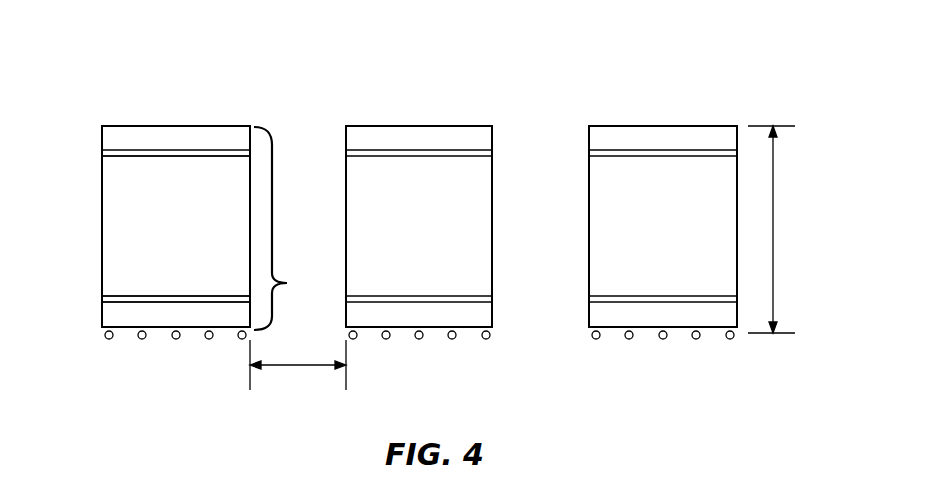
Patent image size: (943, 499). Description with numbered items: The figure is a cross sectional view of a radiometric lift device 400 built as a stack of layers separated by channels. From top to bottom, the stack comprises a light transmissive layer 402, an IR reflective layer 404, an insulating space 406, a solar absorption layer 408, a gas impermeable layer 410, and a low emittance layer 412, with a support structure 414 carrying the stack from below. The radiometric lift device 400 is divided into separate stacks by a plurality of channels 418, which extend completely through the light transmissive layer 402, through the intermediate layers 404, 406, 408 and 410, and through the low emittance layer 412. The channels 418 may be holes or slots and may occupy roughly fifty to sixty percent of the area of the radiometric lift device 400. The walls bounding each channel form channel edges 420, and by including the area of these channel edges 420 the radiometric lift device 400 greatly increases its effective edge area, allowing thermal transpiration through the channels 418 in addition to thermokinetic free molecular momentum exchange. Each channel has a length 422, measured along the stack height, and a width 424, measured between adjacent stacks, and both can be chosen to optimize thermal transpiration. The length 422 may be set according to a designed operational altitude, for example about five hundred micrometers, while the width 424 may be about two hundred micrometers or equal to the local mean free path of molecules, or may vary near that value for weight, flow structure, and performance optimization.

The radiometric lift device 400 is at (432, 215).
The light transmissive layer 402 is at (102, 140).
The IR reflective layer 404 is at (102, 152).
The insulating space 406 is at (102, 232).
The solar absorption layer 408 is at (102, 298).
The gas impermeable layer 410 is at (102, 312).
The low emittance layer 412 is at (102, 329).
The support structure 414 is at (176, 340).
The channels 418 is at (287, 157).
The channel edges 420 is at (293, 228).
The length 422 is at (773, 228).
The width 424 is at (293, 367).